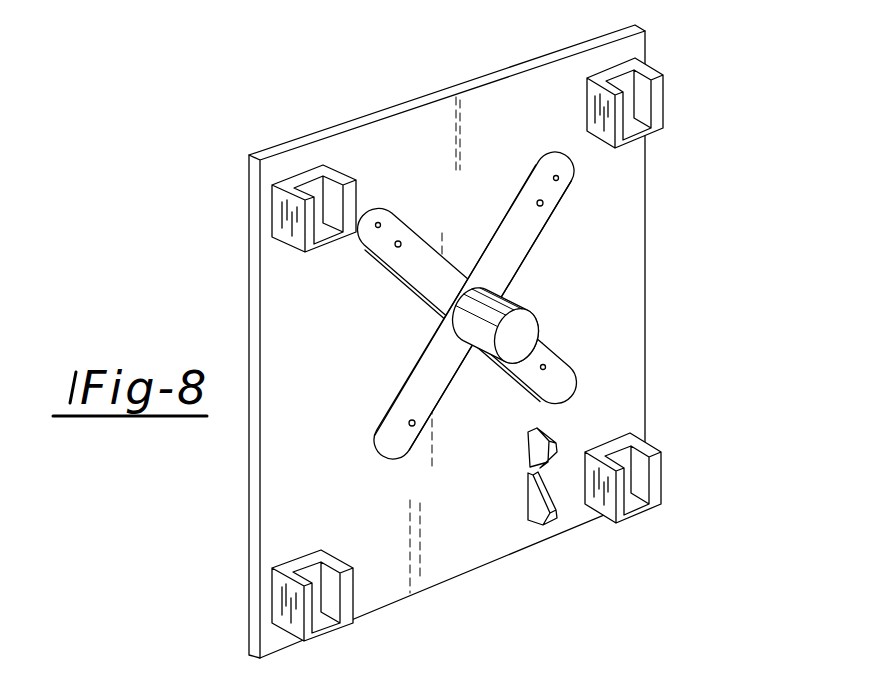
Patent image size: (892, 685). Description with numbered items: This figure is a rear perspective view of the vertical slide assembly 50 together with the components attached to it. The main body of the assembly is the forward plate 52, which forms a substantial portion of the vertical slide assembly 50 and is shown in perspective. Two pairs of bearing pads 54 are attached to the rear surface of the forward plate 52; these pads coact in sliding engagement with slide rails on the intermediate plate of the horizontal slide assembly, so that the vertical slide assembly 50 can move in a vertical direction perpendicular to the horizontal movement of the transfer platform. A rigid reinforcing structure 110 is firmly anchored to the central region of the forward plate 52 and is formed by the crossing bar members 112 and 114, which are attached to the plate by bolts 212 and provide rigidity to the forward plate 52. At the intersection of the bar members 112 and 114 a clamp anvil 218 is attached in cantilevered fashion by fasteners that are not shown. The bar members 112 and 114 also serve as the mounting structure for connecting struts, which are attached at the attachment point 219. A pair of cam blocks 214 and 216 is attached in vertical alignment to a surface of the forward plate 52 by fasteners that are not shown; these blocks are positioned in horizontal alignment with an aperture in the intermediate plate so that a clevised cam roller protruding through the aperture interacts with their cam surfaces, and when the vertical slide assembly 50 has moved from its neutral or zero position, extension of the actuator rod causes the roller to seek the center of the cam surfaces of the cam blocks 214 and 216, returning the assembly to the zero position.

The vertical slide assembly 50 is at (457, 341).
The forward plate 52 is at (352, 121).
The bearing pads 54 is at (657, 70).
The rigid reinforcing structure 110 is at (528, 173).
The bar member 112 is at (412, 228).
The bar member 114 is at (541, 242).
The bolts 212 is at (536, 204).
The cam block 214 is at (527, 448).
The cam block 216 is at (534, 503).
The clamp anvil 218 is at (520, 296).
The attachment point 219 is at (377, 224).